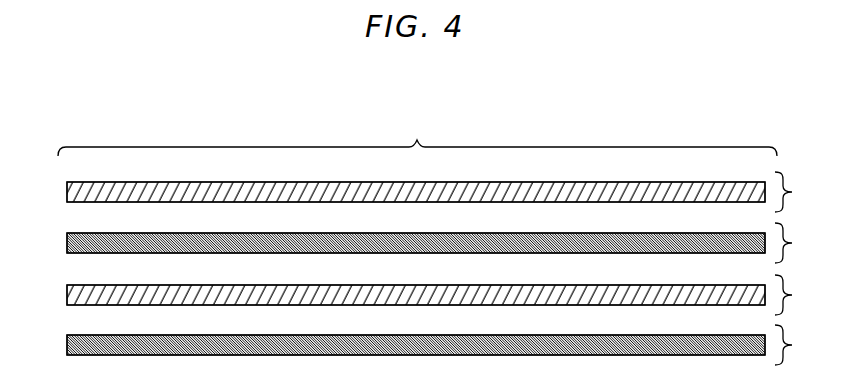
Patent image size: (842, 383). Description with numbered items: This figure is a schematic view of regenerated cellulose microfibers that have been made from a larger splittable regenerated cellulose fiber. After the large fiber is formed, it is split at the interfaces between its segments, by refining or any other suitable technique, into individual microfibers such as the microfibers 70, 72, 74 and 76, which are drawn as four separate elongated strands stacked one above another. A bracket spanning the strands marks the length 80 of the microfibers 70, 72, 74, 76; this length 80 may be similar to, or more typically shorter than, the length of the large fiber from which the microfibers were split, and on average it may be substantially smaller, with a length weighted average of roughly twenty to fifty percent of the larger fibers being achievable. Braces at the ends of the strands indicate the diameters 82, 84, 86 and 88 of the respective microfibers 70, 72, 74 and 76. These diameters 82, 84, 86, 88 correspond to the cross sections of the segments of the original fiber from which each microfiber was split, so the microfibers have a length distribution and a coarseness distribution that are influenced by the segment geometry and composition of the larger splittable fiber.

The microfiber 70 is at (69, 197).
The microfiber 72 is at (71, 247).
The microfiber 74 is at (69, 300).
The microfiber 76 is at (71, 350).
The length 80 is at (417, 134).
The diameter 82 is at (801, 192).
The diameter 84 is at (801, 243).
The diameter 86 is at (801, 295).
The diameter 88 is at (801, 345).